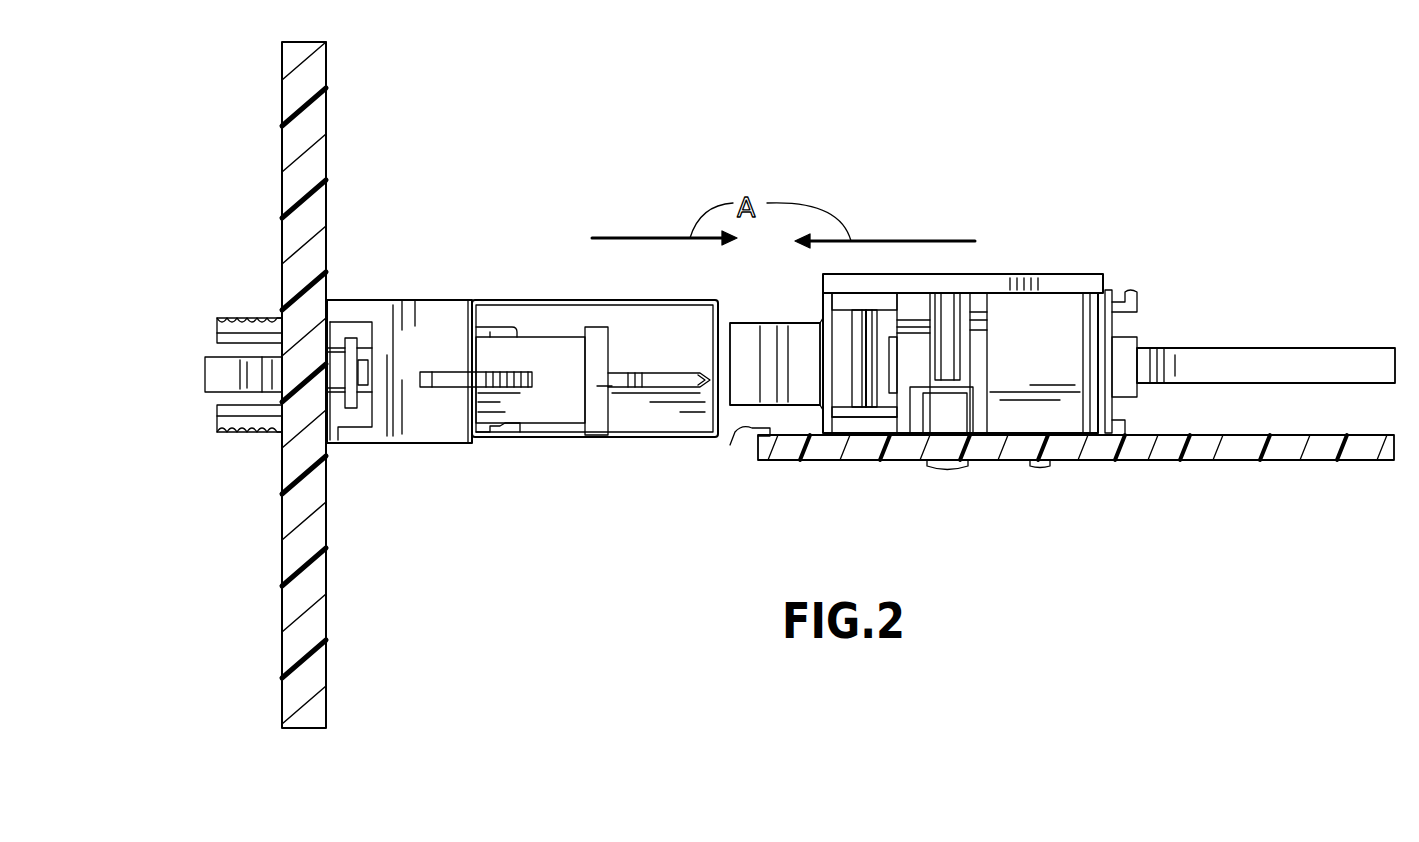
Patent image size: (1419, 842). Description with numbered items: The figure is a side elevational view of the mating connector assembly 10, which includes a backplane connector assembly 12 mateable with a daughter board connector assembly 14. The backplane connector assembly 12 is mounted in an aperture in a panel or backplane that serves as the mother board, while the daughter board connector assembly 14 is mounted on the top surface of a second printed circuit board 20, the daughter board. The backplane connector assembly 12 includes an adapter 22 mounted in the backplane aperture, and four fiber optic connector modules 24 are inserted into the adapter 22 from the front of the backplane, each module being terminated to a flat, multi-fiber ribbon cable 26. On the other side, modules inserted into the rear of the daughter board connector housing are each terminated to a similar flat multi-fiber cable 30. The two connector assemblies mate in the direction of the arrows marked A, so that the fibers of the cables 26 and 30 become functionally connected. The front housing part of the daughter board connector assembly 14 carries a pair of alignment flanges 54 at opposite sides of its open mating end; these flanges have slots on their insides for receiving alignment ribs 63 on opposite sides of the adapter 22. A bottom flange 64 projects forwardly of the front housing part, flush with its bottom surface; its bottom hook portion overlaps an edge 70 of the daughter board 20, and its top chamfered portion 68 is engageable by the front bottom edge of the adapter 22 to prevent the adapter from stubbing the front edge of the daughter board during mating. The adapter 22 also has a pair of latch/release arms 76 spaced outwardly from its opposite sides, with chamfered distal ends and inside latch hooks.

The mating connector assembly 10 is at (846, 192).
The backplane connector assembly 12 is at (400, 285).
The daughter board connector assembly 14 is at (1012, 270).
The second printed circuit board 20 is at (1012, 447).
The adapter 22 is at (365, 447).
The fiber optic connector modules 24 is at (205, 425).
The multi-fiber cable 26 is at (215, 377).
The multi-fiber cable 30 is at (1210, 365).
The alignment flanges 54 is at (738, 375).
The alignment ribs 63 is at (647, 380).
The bottom flange 64 is at (815, 432).
The top chamfered portion 68 is at (760, 432).
The edge of daughter board 70 is at (760, 452).
The latch/release arms 76 is at (548, 400).